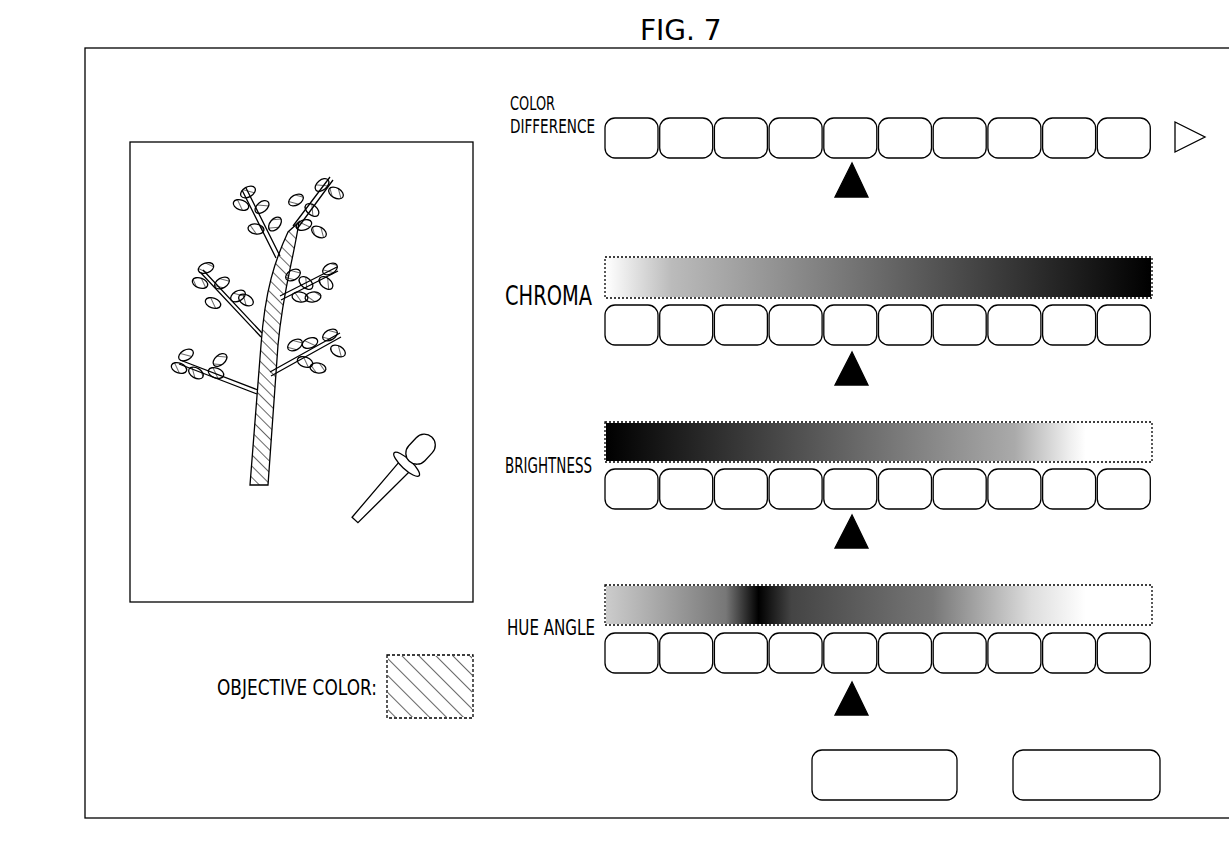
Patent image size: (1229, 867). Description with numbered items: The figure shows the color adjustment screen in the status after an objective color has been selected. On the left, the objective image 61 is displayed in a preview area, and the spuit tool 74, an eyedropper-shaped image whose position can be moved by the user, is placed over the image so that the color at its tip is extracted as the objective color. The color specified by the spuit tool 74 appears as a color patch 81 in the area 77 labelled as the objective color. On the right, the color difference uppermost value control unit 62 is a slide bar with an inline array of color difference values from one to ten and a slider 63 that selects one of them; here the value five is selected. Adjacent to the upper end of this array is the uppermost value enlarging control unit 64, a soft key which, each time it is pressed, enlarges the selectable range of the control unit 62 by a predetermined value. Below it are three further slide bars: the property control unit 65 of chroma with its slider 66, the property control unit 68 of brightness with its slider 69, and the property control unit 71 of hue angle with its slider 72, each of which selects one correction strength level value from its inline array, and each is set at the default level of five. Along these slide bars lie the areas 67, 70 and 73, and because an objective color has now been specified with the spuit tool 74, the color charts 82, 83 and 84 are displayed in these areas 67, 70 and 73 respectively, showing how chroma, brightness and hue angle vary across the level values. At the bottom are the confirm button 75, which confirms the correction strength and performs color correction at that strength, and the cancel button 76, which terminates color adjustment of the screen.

The objective image 61 is at (397, 142).
The color difference uppermost value control unit 62 is at (1017, 105).
The slider 63 is at (834, 196).
The uppermost value enlarging control unit 64 is at (1186, 122).
The property control unit of chroma 65 is at (1003, 356).
The slider 66 is at (834, 380).
The area 67 is at (1154, 268).
The property control unit of brightness 68 is at (1003, 518).
The slider 69 is at (834, 543).
The area 70 is at (1154, 432).
The property control unit of hue angle 71 is at (1003, 684).
The slider 72 is at (834, 710).
The area 73 is at (1154, 597).
The spuit tool 74 is at (443, 445).
The confirm button 75 is at (927, 750).
The cancel button 76 is at (1130, 750).
The area 77 is at (455, 655).
The color patch 81 is at (460, 695).
The color chart 82 is at (1110, 258).
The color chart 83 is at (1100, 427).
The color chart 84 is at (1100, 592).